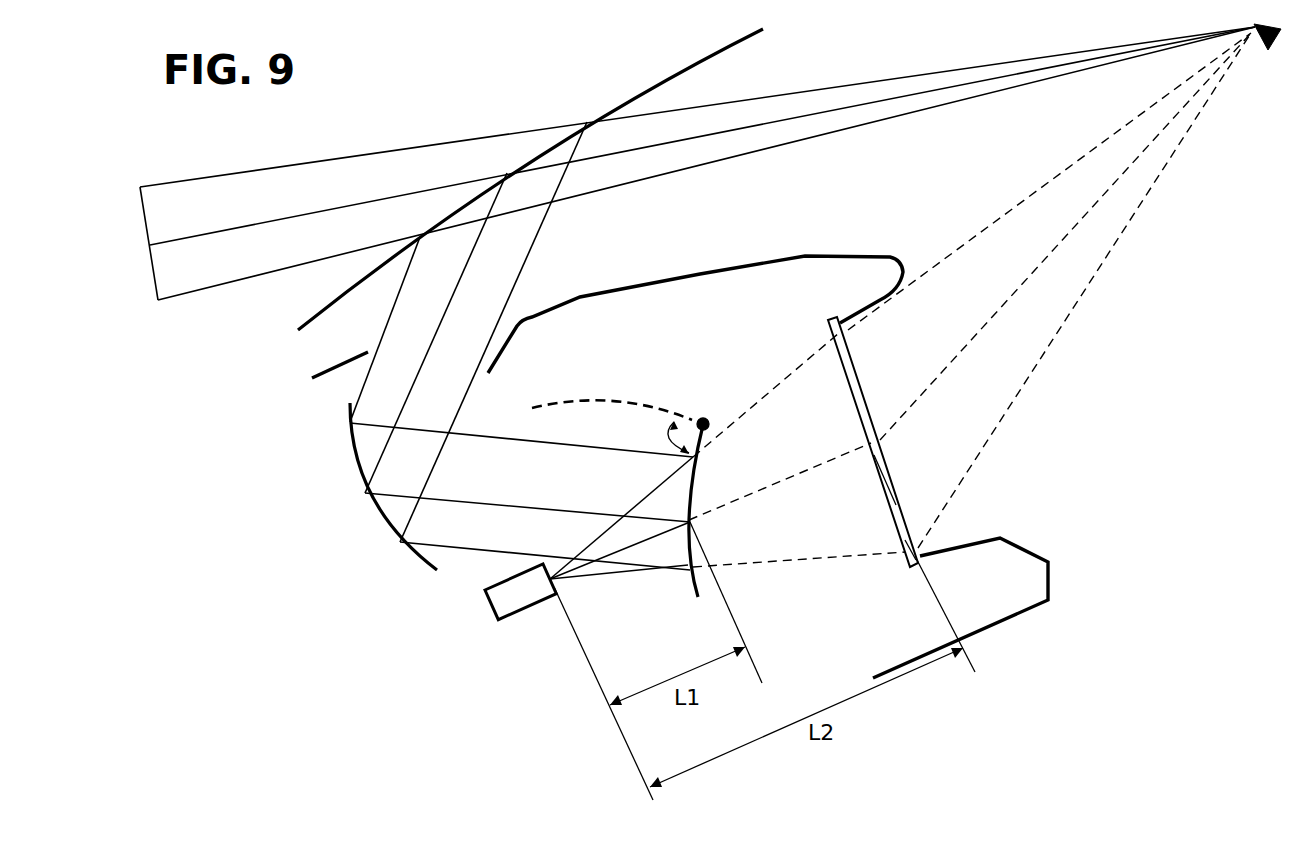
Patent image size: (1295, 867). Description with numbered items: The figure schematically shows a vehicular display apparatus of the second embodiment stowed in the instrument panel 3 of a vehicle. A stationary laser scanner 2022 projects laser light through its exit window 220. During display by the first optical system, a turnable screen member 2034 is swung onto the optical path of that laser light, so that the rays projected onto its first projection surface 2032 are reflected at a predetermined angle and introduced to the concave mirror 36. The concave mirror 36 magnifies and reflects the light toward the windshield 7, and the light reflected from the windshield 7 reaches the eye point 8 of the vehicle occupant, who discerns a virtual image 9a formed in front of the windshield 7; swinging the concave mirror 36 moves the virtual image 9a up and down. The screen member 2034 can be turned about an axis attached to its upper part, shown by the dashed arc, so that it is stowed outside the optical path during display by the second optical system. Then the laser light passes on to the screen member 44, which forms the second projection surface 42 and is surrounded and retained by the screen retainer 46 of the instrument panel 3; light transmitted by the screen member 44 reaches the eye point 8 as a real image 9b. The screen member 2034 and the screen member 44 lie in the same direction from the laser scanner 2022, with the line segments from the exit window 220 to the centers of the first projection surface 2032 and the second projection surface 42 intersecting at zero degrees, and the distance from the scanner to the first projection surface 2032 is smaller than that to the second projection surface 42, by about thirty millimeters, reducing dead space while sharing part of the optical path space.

The windshield 7 is at (706, 58).
The eye point 8 is at (1268, 52).
The virtual image 9a is at (147, 208).
The real image 9b is at (882, 447).
The instrument panel 3 is at (788, 258).
The screen retainer 46 is at (1005, 542).
The concave mirror 36 is at (403, 546).
The second projection surface 42 is at (872, 493).
The screen member 44 is at (899, 527).
The exit window 220 is at (560, 583).
The laser scanner 2022 is at (533, 613).
The first projection surface 2032 is at (686, 553).
The screen member 2034 is at (707, 437).